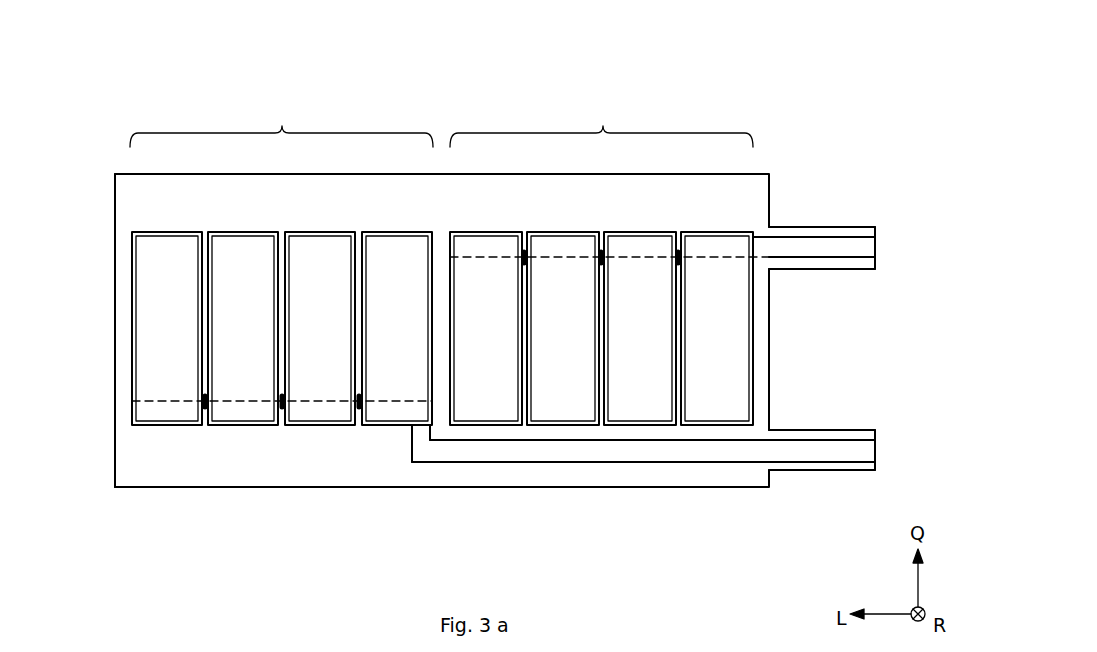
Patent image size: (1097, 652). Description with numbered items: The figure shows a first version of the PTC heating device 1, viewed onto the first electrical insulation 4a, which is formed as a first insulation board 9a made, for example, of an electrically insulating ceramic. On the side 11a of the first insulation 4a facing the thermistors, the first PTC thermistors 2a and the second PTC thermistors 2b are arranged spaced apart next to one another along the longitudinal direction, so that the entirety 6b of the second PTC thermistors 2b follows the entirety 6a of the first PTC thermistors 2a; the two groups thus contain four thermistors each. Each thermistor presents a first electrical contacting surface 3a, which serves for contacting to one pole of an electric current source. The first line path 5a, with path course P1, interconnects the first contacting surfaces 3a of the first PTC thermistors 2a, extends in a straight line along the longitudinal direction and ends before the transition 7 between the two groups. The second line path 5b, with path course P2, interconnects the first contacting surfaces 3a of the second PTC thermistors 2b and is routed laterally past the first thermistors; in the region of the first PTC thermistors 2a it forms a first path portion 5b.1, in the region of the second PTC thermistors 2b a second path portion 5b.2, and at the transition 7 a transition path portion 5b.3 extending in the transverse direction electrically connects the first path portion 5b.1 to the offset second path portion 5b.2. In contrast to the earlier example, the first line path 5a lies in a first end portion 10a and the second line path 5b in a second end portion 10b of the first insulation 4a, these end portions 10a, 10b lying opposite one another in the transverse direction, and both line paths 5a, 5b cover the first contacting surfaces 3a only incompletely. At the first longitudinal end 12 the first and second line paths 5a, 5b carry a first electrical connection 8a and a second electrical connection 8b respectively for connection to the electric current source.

The PTC heating device 1 is at (890, 128).
The first PTC thermistors 2a is at (479, 256).
The second PTC thermistors 2b is at (167, 256).
The first electrical contacting surface 3a is at (189, 232).
The first electrical insulation 4a is at (270, 535).
The first insulation board 9a is at (160, 500).
The first line path 5a is at (662, 234).
The path course of the first line path P1 is at (797, 222).
The second line path 5b is at (503, 477).
The path course of the second line path P2 is at (643, 499).
The first path portion 5b.1 is at (598, 456).
The second path portion 5b.2 is at (225, 413).
The transition path portion 5b.3 is at (418, 434).
The entirety of the first PTC thermistors 6a is at (603, 126).
The entirety of the second PTC thermistors 6b is at (282, 126).
The transition 7 is at (440, 430).
The first electrical connection 8a is at (857, 252).
The second electrical connection 8b is at (857, 445).
The first end portion 10a is at (138, 196).
The second end portion 10b is at (128, 474).
The side of the first electrical insulation 11a is at (147, 446).
The first longitudinal end 12 is at (877, 240).